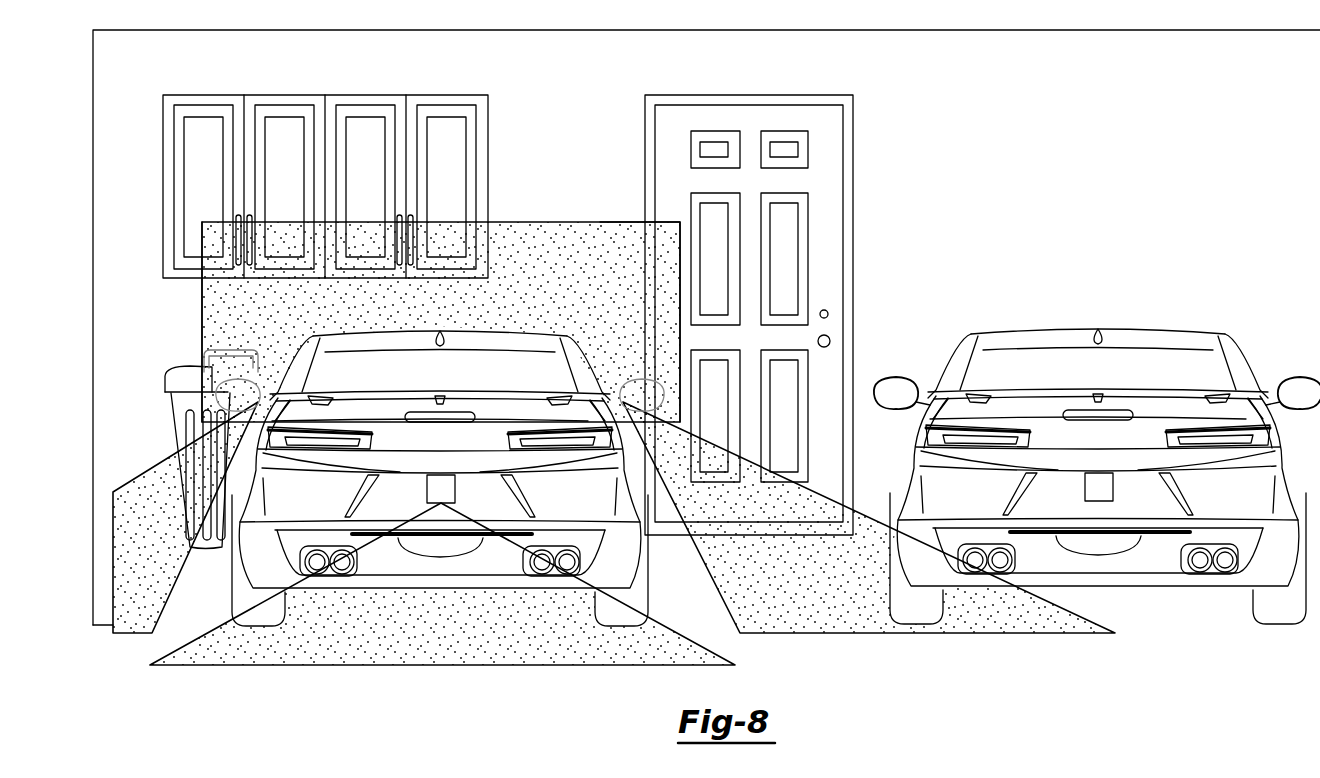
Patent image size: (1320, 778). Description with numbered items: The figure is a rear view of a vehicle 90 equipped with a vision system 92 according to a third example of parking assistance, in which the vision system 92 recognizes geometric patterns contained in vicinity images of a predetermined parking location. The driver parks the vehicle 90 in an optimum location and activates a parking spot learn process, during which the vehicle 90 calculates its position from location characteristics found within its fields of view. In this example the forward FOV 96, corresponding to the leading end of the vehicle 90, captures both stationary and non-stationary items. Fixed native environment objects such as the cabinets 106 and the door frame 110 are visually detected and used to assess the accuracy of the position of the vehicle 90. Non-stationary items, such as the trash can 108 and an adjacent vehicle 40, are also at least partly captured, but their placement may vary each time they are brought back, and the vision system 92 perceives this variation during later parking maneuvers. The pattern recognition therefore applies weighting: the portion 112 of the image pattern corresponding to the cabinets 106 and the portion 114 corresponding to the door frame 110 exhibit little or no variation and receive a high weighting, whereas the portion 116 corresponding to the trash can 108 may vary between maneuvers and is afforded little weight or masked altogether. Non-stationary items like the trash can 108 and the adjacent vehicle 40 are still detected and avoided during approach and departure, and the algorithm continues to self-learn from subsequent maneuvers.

The adjacent vehicle 40 is at (992, 330).
The vehicle 90 is at (514, 360).
The vision system 92 is at (541, 212).
The forward FOV 96 is at (202, 320).
The cabinets 106 is at (488, 116).
The trash can 108 is at (168, 423).
The door frame 110 is at (853, 143).
The portion of image pattern corresponding to cabinets 112 is at (278, 222).
The portion of image pattern corresponding to door frame 114 is at (667, 222).
The portion of image pattern corresponding to trash can 116 is at (242, 349).